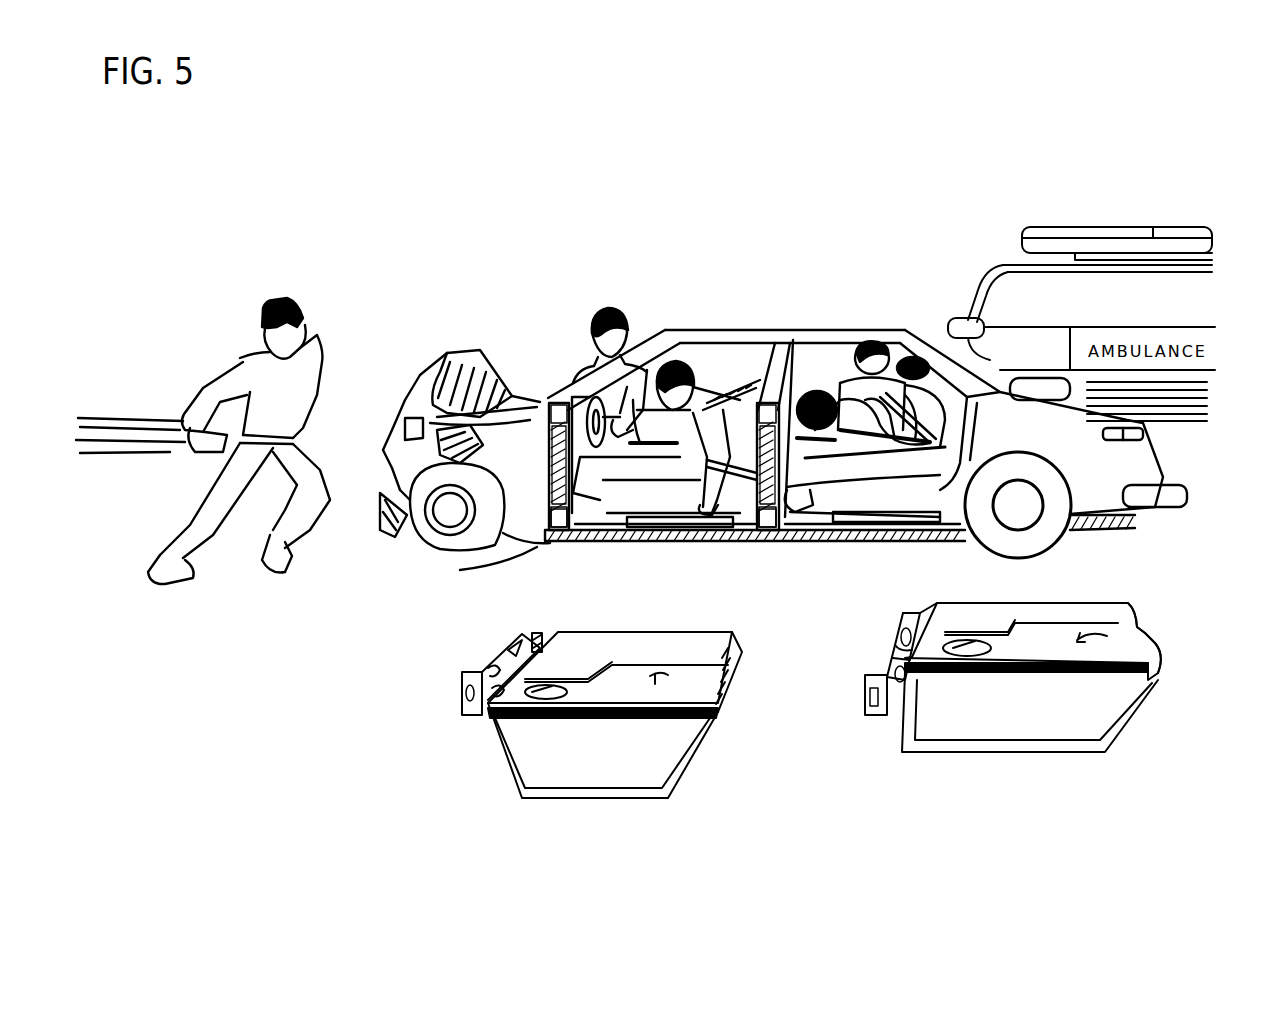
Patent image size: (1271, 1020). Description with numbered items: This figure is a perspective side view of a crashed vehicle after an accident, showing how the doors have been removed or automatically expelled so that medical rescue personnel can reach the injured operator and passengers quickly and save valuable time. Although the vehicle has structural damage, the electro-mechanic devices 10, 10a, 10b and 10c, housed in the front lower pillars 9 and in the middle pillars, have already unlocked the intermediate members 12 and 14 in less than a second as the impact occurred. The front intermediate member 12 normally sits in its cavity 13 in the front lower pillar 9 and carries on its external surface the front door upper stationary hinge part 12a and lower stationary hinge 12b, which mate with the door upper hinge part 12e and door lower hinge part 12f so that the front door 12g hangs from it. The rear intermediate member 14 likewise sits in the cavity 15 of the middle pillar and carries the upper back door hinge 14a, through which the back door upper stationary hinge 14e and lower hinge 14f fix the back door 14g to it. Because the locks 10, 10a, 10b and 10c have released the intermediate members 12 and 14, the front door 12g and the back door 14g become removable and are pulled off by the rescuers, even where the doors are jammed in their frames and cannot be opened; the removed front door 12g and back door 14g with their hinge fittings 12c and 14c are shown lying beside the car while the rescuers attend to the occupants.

The front lower pillar 9 is at (546, 398).
The electro-mechanic lock-solenoid 10 is at (557, 403).
The electro-mechanic lock-solenoid 10a is at (556, 530).
The upper side electro-mechanic lock 10b is at (758, 405).
The lower side electro-mechanic lock 10c is at (762, 545).
The intermediate member 12 is at (536, 718).
The front door upper stationary hinge part 12a is at (497, 693).
The front door lower stationary hinge part 12b is at (527, 650).
The front door hinge plate 12c is at (466, 692).
The door upper hinge part 12e is at (538, 705).
The door lower hinge part 12f is at (535, 652).
The front door 12g is at (722, 710).
The intermediate member cavity 13 is at (536, 404).
The intermediate member 14 is at (1004, 711).
The upper back door hinge 14a is at (893, 700).
The rear door hinge plate 14c is at (868, 718).
The back door upper stationary hinge 14e is at (932, 662).
The back door lower stationary hinge 14f is at (912, 612).
The back door 14g is at (1150, 688).
The cavity 15 is at (812, 345).